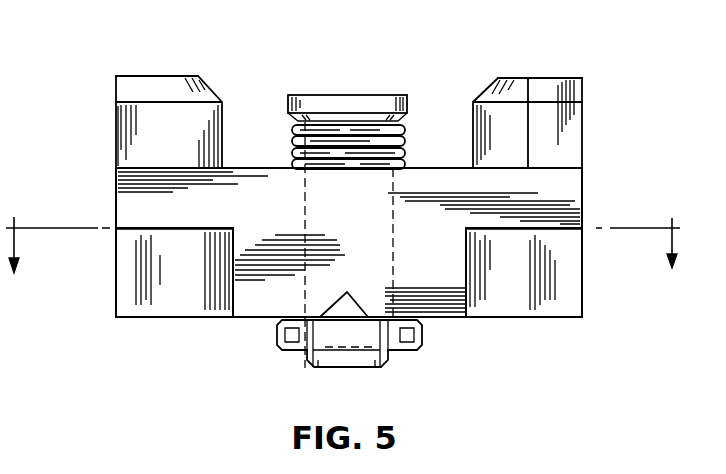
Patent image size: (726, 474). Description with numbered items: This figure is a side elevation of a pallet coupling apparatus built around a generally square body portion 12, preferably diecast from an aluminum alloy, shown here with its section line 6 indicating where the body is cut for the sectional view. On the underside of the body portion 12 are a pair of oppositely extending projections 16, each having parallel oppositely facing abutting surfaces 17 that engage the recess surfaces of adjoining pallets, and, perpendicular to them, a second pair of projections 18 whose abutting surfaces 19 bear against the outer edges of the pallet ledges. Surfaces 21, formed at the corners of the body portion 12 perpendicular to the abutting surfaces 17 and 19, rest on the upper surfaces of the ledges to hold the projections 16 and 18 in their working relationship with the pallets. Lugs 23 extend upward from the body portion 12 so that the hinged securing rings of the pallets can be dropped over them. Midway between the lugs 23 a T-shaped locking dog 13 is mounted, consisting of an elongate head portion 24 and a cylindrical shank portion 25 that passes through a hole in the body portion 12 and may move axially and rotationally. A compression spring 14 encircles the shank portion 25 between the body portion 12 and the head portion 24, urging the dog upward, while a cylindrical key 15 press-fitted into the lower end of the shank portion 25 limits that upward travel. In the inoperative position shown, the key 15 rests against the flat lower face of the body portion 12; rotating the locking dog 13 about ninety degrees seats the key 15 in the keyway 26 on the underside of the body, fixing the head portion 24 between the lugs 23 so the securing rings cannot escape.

The section line 6- 6 is at (345, 245).
The body portion 12 is at (552, 183).
The locking dog 13 is at (375, 94).
The compression spring 14 is at (293, 132).
The cylindrical key 15 is at (405, 352).
The projections 16 is at (582, 287).
The abutting surfaces 17 is at (547, 300).
The second pair of projections 18 is at (270, 292).
The abutting surfaces 19 is at (468, 265).
The surfaces 21 is at (565, 232).
The lugs 23 is at (520, 78).
The elongate head portion 24 is at (353, 102).
The cylindrical shank portion 25 is at (330, 368).
The keyway 26 is at (355, 310).